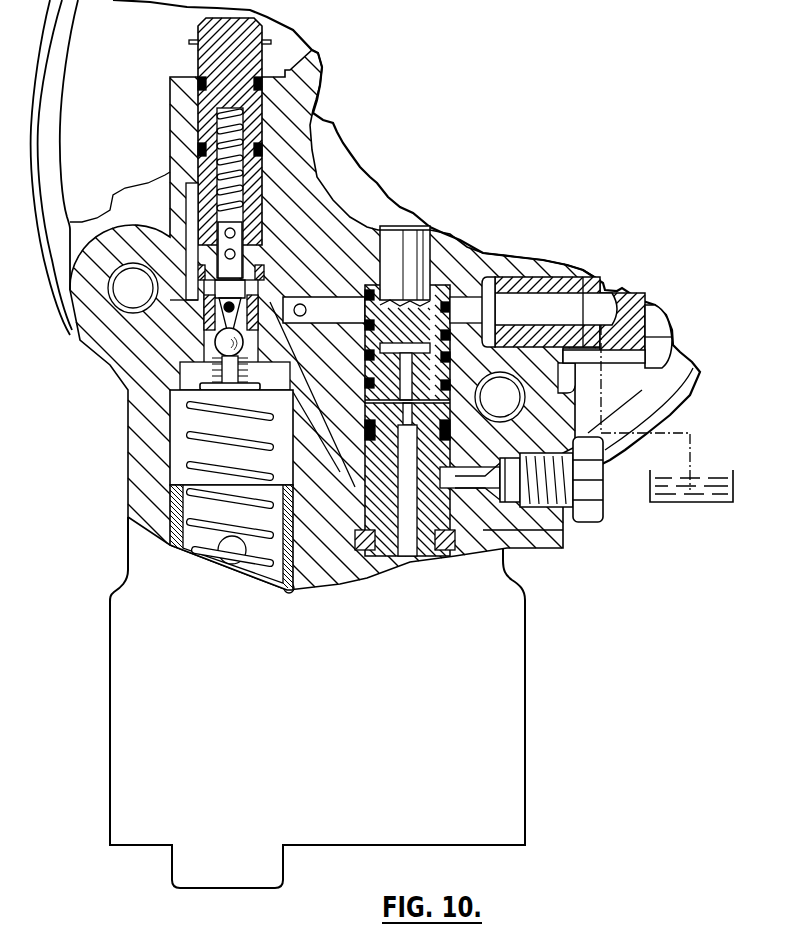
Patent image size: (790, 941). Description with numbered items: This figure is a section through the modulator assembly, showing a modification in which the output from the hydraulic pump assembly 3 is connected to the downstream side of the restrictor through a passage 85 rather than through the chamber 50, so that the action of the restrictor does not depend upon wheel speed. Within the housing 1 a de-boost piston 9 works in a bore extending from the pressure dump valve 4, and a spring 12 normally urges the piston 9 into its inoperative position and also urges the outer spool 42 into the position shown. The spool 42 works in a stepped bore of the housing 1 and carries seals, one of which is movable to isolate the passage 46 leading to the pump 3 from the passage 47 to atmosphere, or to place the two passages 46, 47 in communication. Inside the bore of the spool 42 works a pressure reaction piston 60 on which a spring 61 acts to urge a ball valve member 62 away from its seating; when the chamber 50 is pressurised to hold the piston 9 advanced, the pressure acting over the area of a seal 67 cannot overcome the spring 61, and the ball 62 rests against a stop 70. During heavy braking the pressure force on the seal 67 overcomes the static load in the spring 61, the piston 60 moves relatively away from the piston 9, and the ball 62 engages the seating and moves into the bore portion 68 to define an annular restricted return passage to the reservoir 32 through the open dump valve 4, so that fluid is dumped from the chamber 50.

The housing 1 is at (487, 645).
The hydraulic pump assembly 3 is at (441, 517).
The pressure dump valve 4 is at (216, 336).
The de-boost piston 9 is at (175, 487).
The spring 12 is at (187, 407).
The reservoir 32 is at (709, 488).
The outer spool 42 is at (222, 71).
The passage 46 is at (216, 343).
The passage to atmosphere 47 is at (212, 193).
The chamber 50 is at (182, 450).
The pressure reaction piston 60 is at (226, 245).
The spring 61 is at (228, 141).
The valve member 62 is at (276, 297).
The seal 67 is at (207, 310).
The bore portion 68 is at (252, 232).
The stop 70 is at (200, 368).
The passage 85 is at (323, 420).